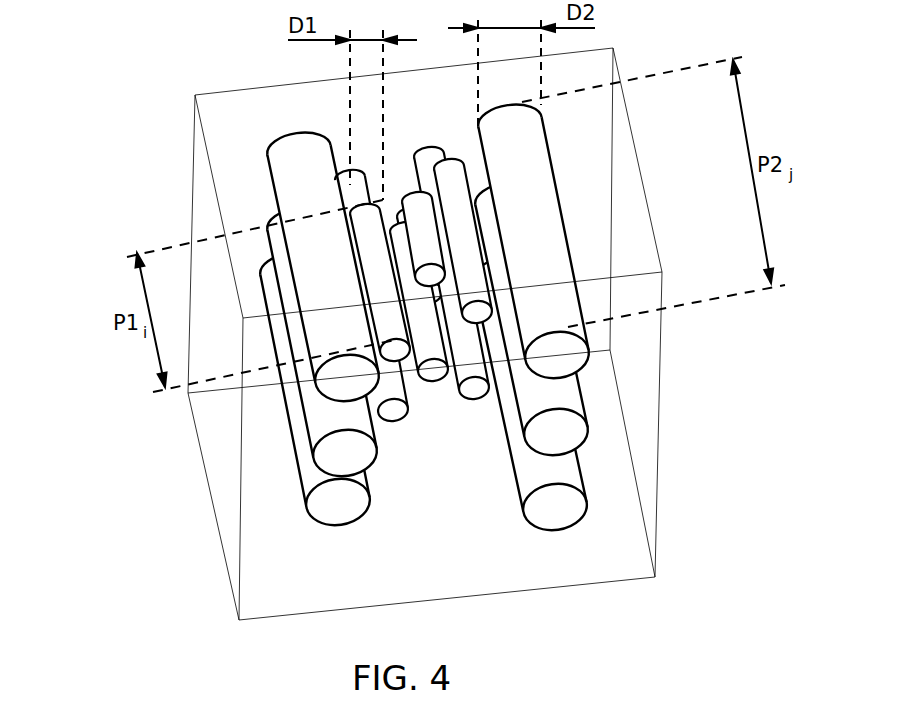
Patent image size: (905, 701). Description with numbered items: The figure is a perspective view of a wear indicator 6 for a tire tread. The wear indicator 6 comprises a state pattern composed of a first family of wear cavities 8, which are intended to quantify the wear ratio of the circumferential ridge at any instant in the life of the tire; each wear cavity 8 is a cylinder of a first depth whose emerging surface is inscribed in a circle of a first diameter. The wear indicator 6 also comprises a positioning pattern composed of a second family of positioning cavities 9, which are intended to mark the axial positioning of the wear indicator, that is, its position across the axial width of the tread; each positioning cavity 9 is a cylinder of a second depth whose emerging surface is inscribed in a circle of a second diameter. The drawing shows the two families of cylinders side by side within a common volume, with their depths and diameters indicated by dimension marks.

The wear indicator 6 is at (143, 125).
The wear cavity 8 is at (372, 230).
The positioning cavity 9 is at (537, 218).